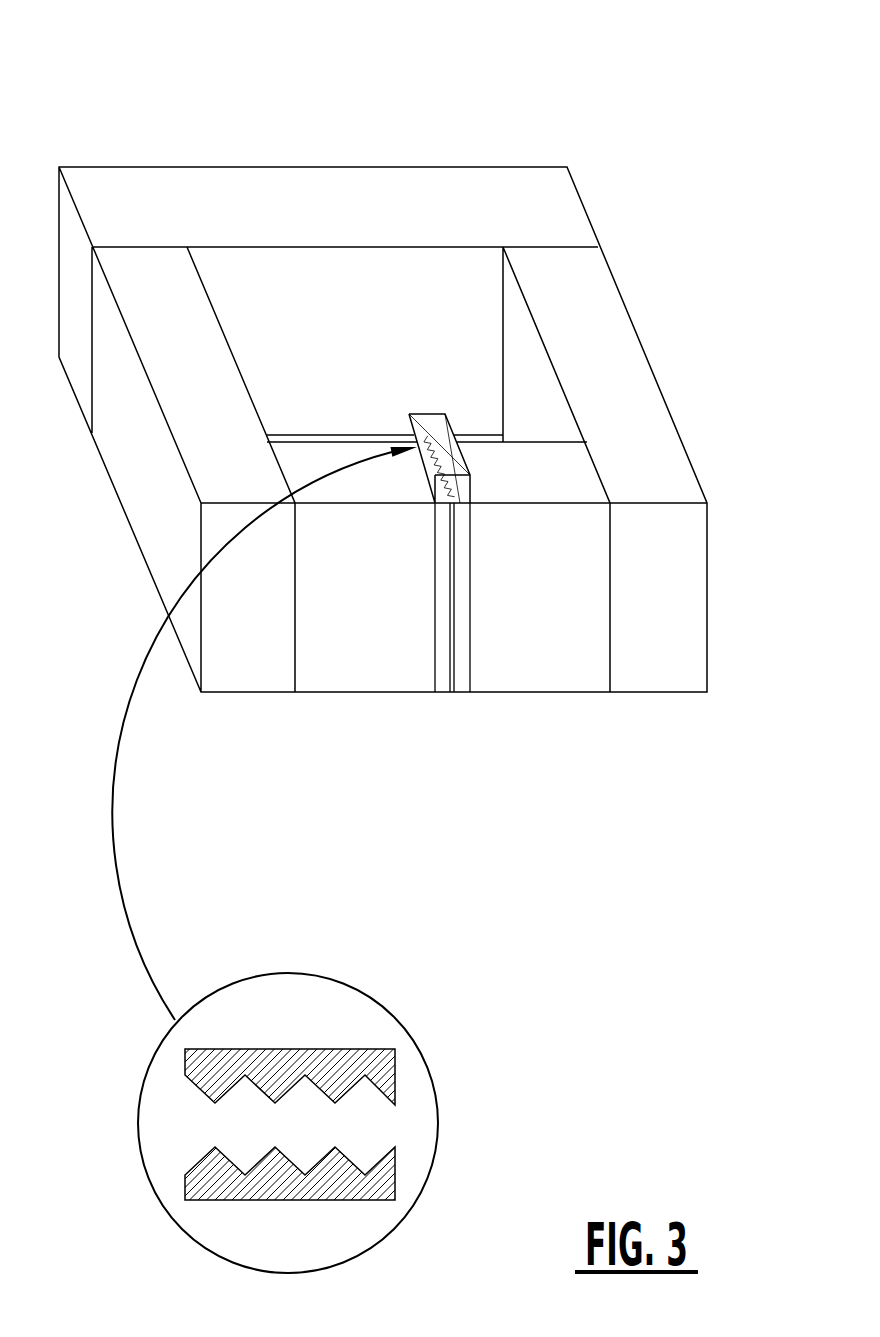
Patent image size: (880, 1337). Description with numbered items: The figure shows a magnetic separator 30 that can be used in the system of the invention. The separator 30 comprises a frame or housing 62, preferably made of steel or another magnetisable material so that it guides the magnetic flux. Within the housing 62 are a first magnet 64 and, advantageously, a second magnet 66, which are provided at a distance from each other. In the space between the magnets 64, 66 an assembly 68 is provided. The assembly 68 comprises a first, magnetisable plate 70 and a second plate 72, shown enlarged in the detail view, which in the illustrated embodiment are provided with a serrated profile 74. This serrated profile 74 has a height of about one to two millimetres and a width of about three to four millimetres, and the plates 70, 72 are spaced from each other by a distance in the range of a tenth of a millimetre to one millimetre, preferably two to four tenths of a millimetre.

The separator 30 is at (436, 403).
The frame or housing 62 is at (355, 188).
The first magnet 64 is at (344, 447).
The second magnet 66 is at (535, 462).
The assembly 68 is at (478, 731).
The first plate 70 is at (370, 1182).
The second plate 72 is at (345, 1062).
The profile 74 is at (407, 1121).